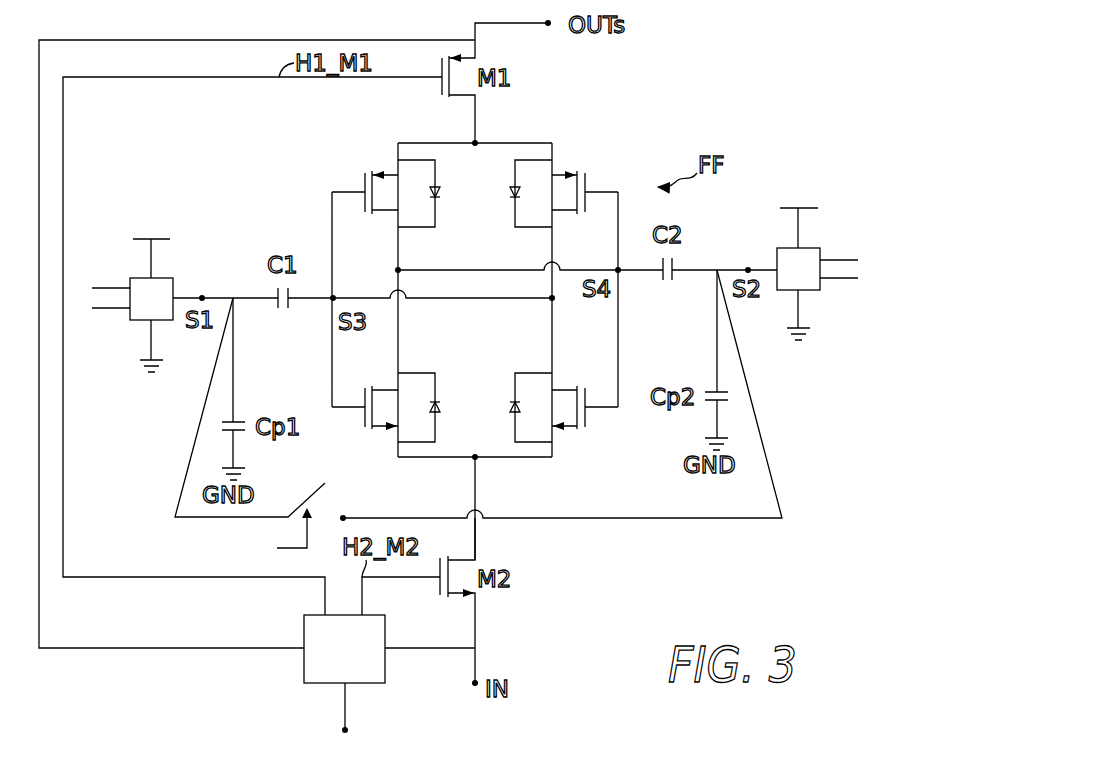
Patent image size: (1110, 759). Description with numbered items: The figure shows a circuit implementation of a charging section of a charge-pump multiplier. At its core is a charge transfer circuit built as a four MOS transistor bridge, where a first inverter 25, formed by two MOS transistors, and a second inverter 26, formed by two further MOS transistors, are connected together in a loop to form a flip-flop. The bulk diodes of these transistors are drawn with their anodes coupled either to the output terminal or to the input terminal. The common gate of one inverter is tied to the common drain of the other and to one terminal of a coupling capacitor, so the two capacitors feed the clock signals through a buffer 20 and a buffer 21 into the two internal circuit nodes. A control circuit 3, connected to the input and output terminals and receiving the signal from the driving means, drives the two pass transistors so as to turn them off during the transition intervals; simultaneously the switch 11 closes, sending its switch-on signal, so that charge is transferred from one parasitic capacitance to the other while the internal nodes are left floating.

The control circuit 3 is at (386, 640).
The switch 11 is at (296, 506).
The buffer 20 is at (174, 280).
The buffer 21 is at (777, 250).
The first inverter 25 is at (634, 332).
The second inverter 26 is at (306, 198).